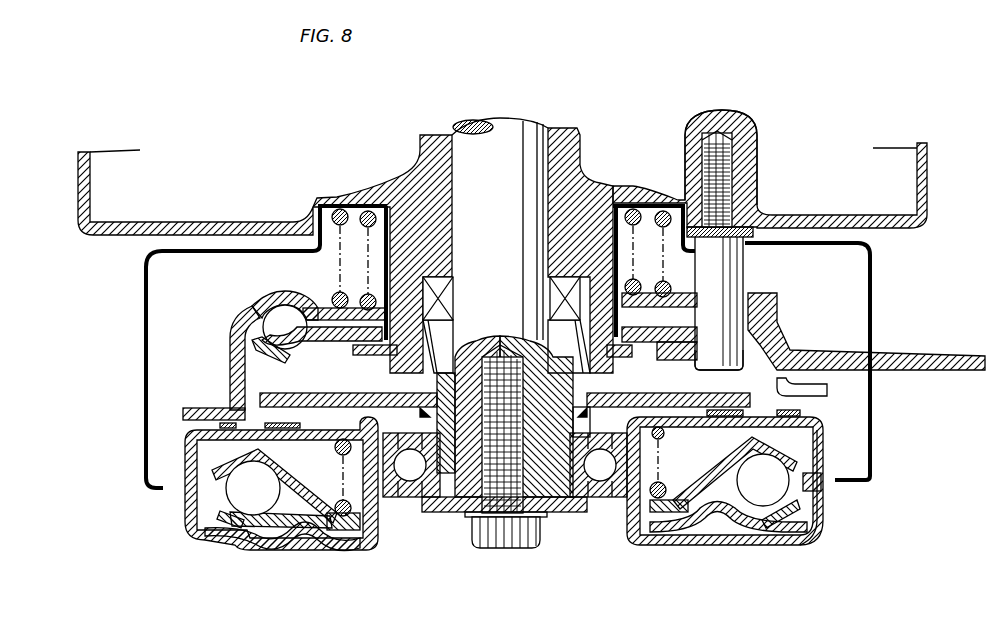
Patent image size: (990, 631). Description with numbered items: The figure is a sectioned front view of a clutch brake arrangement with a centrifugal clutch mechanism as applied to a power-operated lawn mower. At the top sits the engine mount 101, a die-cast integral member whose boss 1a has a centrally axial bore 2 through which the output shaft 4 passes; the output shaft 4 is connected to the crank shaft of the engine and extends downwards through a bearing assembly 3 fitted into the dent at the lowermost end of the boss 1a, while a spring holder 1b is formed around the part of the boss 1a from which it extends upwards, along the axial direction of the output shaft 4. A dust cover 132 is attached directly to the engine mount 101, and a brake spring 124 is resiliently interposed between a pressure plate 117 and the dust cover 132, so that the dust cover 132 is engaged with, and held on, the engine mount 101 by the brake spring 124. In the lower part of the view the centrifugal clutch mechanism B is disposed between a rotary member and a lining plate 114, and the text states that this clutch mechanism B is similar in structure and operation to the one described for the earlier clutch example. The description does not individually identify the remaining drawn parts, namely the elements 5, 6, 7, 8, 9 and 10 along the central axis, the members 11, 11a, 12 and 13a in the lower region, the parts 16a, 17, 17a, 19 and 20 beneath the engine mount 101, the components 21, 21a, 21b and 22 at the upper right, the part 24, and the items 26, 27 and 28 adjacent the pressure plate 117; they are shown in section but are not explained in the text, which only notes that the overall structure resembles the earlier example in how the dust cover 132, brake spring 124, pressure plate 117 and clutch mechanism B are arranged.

The engine mount 101 is at (417, 158).
The boss 1a is at (598, 268).
The spring holder 1b is at (665, 200).
The bore 2 is at (512, 128).
The bearing assembly 3 is at (448, 302).
The output shaft 4 is at (663, 393).
The spacer 5 is at (592, 425).
The bolt 6 is at (462, 372).
The ball bearing 7 is at (615, 498).
The bottom plate 8 is at (557, 513).
The bolt head 9 is at (481, 549).
The washer 10 is at (470, 515).
The seal member 11 is at (748, 535).
The seal cover 11a is at (822, 498).
The seal member 12 is at (298, 540).
The retaining tab 13a is at (823, 480).
The bearing retainer 16a is at (357, 203).
The bracket 17 is at (619, 320).
The stopper 17a is at (364, 357).
The arm plate 19 is at (334, 343).
The bracket 20 is at (605, 352).
The bolt 21 is at (748, 272).
The sleeve 21a is at (735, 292).
The boss 21b is at (705, 148).
The nut 22 is at (760, 233).
The spacer sleeve 24 is at (700, 352).
The spring plate 26 is at (283, 350).
The ball 27 is at (283, 318).
The ball housing 28 is at (302, 304).
The lining plate 114 is at (681, 430).
The pressure plate 117 is at (238, 328).
The brake spring 124 is at (335, 203).
The dust cover 132 is at (873, 300).
The centrifugal clutch mechanism B is at (212, 470).